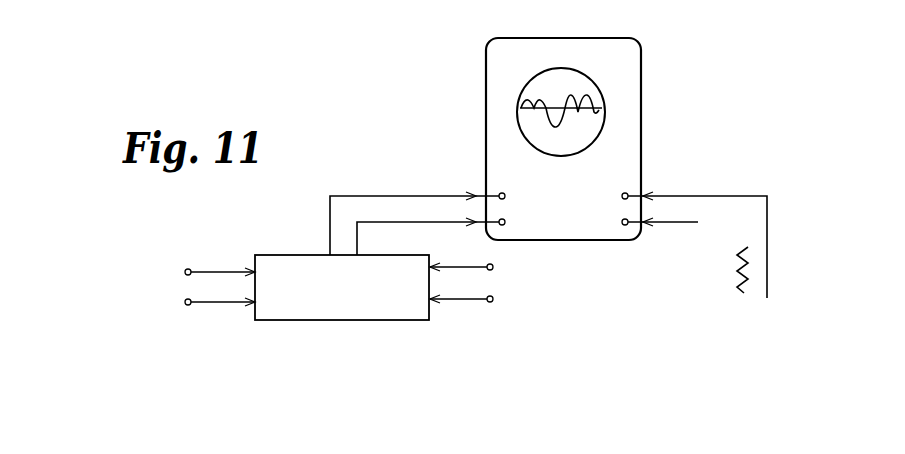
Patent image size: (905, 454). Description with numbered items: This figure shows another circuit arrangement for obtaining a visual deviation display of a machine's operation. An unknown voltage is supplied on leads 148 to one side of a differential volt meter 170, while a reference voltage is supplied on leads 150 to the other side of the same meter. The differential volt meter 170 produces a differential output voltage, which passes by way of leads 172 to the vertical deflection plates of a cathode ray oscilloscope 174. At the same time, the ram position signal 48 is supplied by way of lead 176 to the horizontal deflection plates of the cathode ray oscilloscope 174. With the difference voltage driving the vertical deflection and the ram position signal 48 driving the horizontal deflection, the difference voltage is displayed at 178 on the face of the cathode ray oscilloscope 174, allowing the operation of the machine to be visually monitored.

The ram position signal 48 is at (759, 289).
The leads 148 is at (225, 304).
The leads 150 is at (460, 300).
The differential volt meter 170 is at (413, 302).
The leads 172 is at (425, 195).
The cathode ray oscilloscope 174 is at (627, 100).
The lead 176 is at (690, 193).
The difference voltage display 178 is at (593, 88).